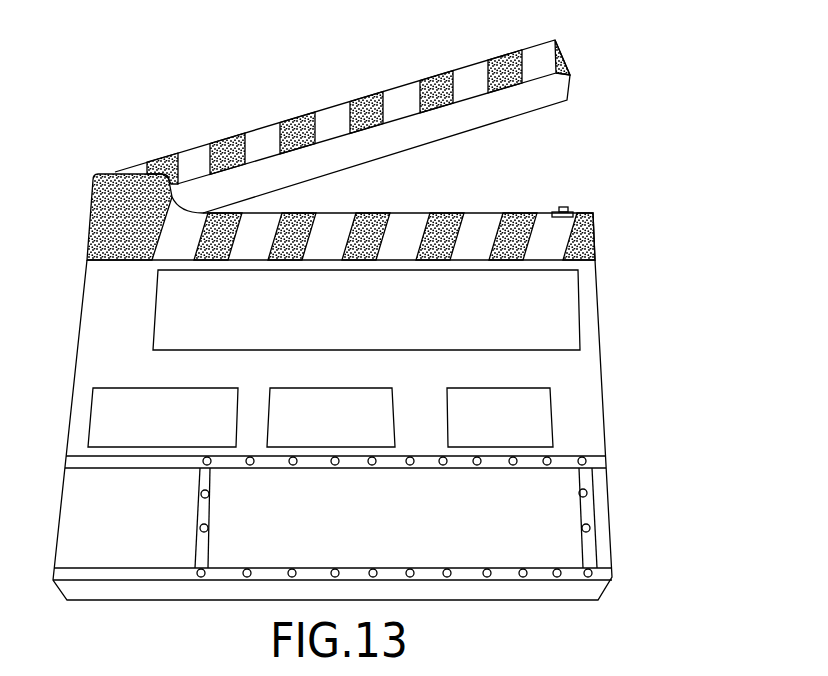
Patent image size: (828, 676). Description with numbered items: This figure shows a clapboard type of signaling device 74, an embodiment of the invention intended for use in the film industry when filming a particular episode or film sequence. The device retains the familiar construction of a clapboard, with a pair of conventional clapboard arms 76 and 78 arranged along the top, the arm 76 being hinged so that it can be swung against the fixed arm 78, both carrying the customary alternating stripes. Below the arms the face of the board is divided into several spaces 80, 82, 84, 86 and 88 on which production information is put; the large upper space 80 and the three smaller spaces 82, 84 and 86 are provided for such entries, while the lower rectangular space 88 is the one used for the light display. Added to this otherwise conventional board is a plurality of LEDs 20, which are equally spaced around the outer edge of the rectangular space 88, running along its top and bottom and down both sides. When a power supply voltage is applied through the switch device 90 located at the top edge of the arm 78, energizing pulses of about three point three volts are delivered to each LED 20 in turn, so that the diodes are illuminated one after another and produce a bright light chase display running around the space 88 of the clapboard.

The clapboard signaling device 74 is at (650, 295).
The clapboard arm 76 is at (542, 52).
The clapboard arm 78 is at (596, 232).
The space 80 is at (386, 326).
The space 82 is at (179, 428).
The space 84 is at (347, 429).
The space 86 is at (517, 429).
The rectangular space 88 is at (478, 547).
The switch device 90 is at (568, 207).
The LEDs 20 is at (211, 464).